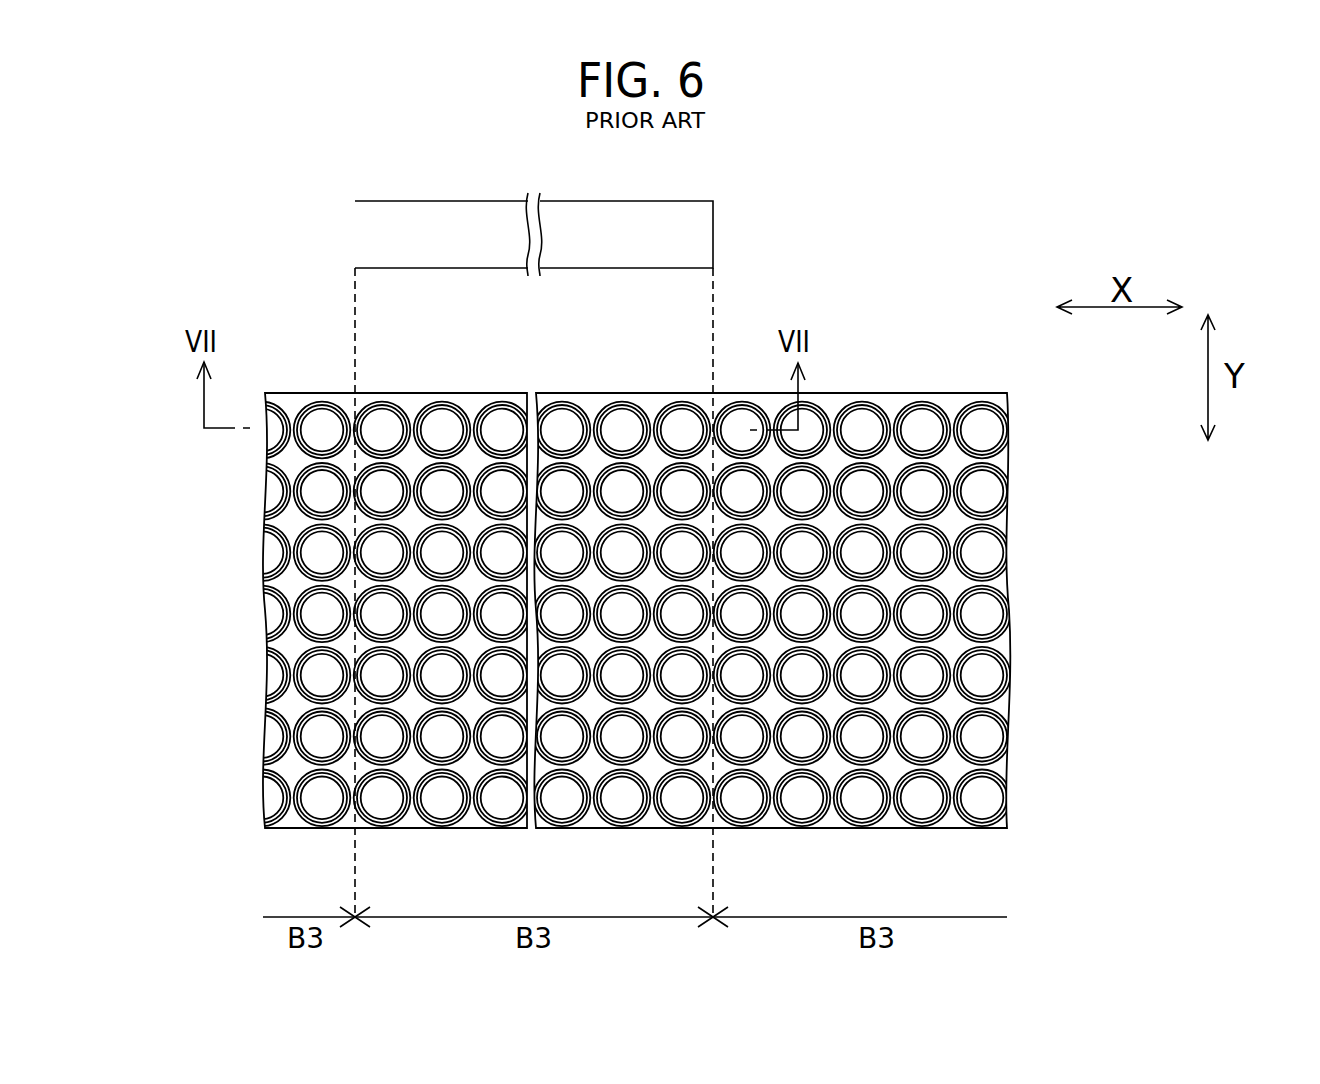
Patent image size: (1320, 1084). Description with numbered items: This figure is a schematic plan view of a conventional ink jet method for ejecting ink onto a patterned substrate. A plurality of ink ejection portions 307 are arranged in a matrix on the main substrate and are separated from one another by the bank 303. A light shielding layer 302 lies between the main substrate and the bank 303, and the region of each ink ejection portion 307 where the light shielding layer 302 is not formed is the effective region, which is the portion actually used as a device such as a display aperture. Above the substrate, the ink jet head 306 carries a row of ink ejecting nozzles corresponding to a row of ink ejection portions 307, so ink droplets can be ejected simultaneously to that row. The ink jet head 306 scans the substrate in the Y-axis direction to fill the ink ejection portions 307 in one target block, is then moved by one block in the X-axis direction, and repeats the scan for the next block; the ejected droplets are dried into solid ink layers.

The light shielding layer 302 is at (962, 497).
The bank 303 is at (1007, 648).
The ink jet head 306 is at (713, 230).
The ink ejection portion 307 is at (983, 528).